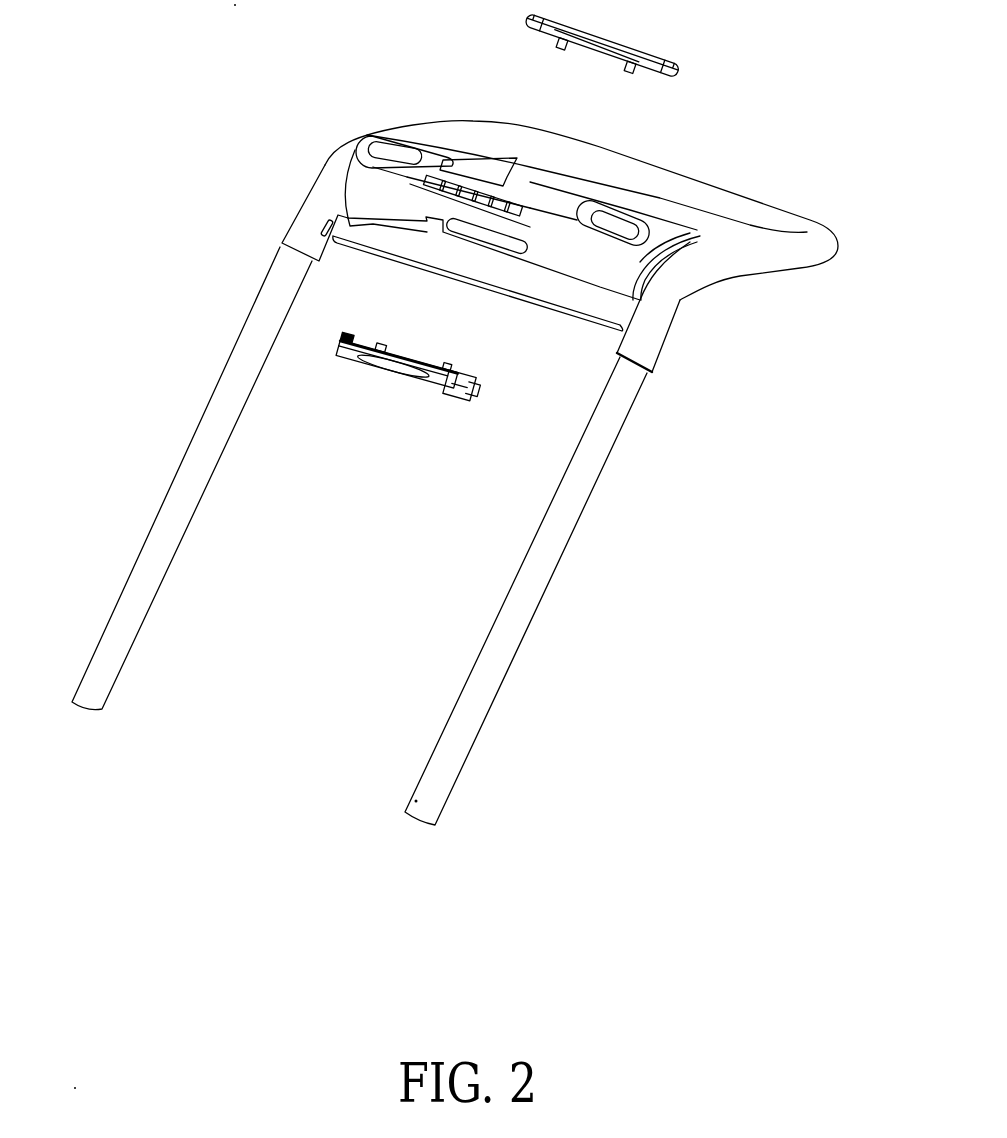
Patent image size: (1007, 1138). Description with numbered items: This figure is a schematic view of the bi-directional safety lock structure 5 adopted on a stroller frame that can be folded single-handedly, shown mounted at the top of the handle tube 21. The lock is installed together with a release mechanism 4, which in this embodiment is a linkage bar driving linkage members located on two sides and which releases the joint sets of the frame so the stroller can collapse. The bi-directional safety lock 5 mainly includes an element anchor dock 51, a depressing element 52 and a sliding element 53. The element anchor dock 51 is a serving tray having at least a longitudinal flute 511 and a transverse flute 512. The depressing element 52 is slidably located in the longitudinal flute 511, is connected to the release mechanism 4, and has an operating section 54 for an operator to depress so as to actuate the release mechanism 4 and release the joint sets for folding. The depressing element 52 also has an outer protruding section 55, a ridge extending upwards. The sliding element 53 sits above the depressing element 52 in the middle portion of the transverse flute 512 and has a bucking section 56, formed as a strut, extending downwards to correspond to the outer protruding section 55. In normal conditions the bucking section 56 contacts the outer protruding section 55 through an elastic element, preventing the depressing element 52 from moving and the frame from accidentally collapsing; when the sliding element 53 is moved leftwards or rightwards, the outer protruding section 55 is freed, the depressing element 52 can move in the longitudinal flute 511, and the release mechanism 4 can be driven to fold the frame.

The release mechanism 4 is at (355, 240).
The bi-directional safety lock structure 5 is at (478, 329).
The handle tube 21 is at (562, 520).
The element anchor dock 51 is at (355, 173).
The longitudinal flute 511 is at (467, 246).
The transverse flute 512 is at (500, 187).
The depressing element 52 is at (441, 420).
The sliding element 53 is at (575, 43).
The operating section 54 is at (406, 380).
The outer protruding section 55 is at (455, 360).
The bucking section 56 is at (560, 45).